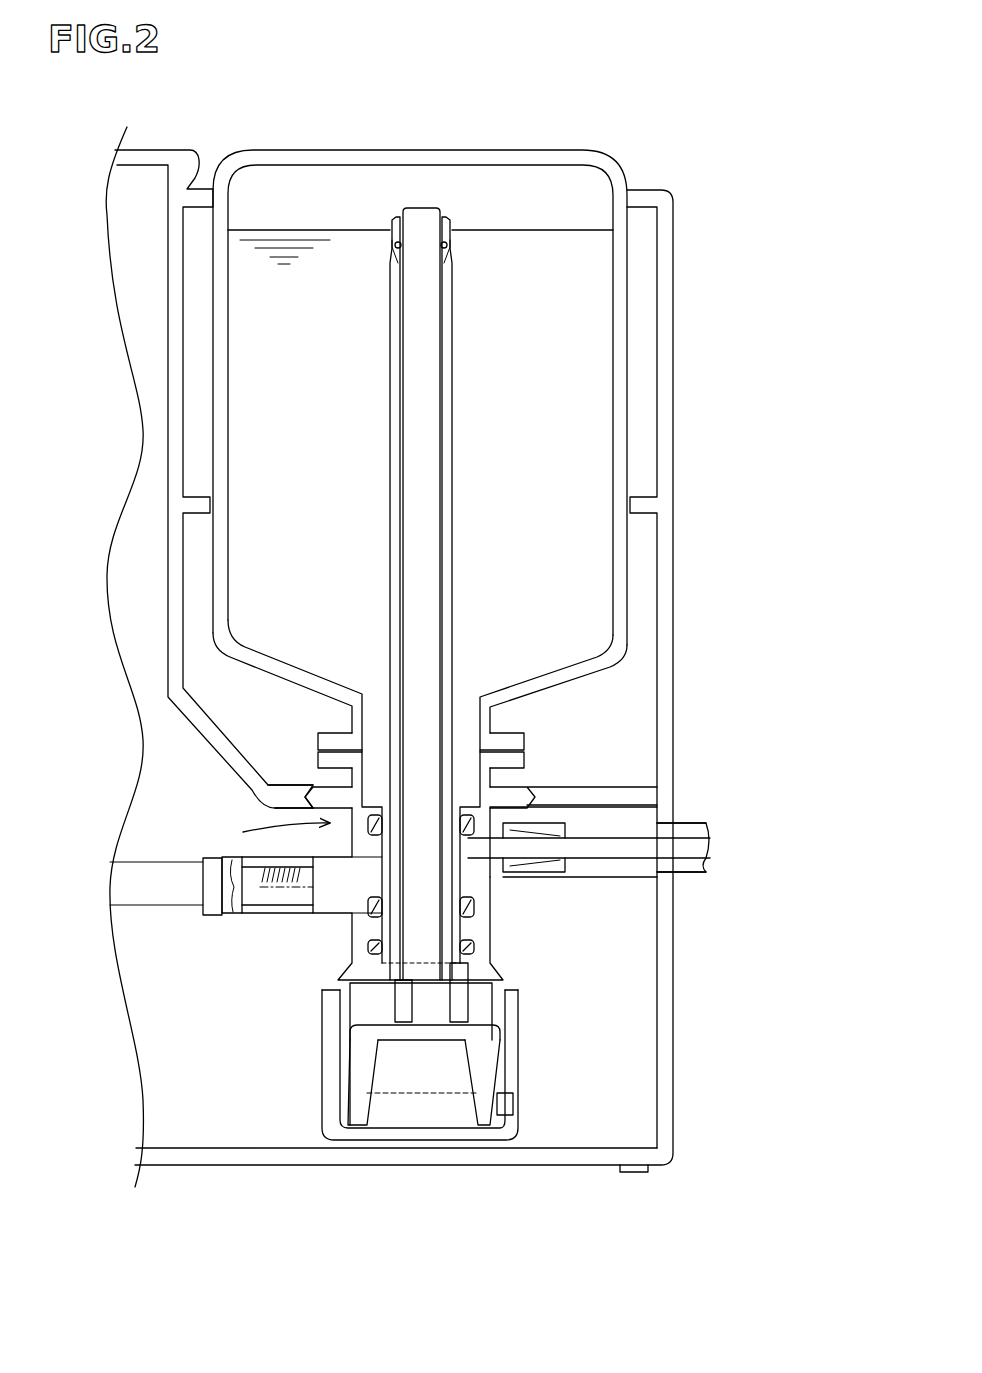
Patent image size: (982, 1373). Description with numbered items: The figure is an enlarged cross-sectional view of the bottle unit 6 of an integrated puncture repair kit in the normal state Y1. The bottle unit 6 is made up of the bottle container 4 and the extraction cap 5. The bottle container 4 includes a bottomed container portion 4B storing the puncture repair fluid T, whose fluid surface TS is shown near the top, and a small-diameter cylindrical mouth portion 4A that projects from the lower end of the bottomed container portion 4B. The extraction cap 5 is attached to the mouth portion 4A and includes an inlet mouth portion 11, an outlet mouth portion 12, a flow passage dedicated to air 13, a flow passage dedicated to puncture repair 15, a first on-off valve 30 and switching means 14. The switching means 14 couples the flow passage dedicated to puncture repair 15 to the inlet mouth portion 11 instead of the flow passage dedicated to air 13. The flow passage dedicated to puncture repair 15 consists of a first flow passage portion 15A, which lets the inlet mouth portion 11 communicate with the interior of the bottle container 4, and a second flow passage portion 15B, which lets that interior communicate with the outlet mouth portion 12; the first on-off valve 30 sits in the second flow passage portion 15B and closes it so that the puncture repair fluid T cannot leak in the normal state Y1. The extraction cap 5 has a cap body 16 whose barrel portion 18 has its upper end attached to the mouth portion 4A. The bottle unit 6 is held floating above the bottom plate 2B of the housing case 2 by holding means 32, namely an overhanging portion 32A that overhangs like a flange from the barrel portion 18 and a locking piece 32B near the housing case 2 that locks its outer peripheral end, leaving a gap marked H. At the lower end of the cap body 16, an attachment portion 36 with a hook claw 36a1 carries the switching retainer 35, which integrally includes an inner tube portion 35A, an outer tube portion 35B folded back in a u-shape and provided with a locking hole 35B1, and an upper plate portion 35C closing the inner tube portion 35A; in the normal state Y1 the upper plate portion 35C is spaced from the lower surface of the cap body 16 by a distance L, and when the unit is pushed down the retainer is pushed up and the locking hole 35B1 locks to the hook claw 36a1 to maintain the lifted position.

The housing case 2 is at (615, 1157).
The bottom plate 2B is at (533, 1157).
The bottle container 4 is at (413, 556).
The mouth portion 4A is at (467, 700).
The bottomed container portion 4B is at (627, 443).
The extraction cap 5 is at (302, 812).
The bottle unit 6 is at (72, 670).
The height gap H is at (192, 152).
The fluid surface TS is at (527, 230).
The puncture repair fluid T is at (525, 347).
The normal state Y1 is at (634, 548).
The holding means 32 is at (302, 681).
The overhanging portion 32A is at (345, 760).
The locking piece 32B is at (284, 785).
The flow passage dedicated to puncture repair 15 is at (551, 754).
The first flow passage portion 15A is at (445, 738).
The second flow passage portion 15B is at (463, 773).
The first on-off valve 30 is at (473, 820).
The outlet mouth portion 12 is at (567, 848).
The flow passage dedicated to air 13 is at (468, 880).
The inlet mouth portion 11 is at (340, 895).
The cap body 16 is at (360, 915).
The barrel portion 18 is at (348, 830).
The switching means 14 is at (467, 997).
The distance L is at (336, 1023).
The attachment portion 36 is at (455, 1100).
The hook claw 36a1 is at (508, 1060).
The switching retainer 35 is at (503, 1163).
The inner tube portion 35A is at (373, 1095).
The outer tube portion 35B is at (332, 1095).
The upper plate portion 35C is at (440, 1033).
The locking hole 35B1 is at (513, 1102).